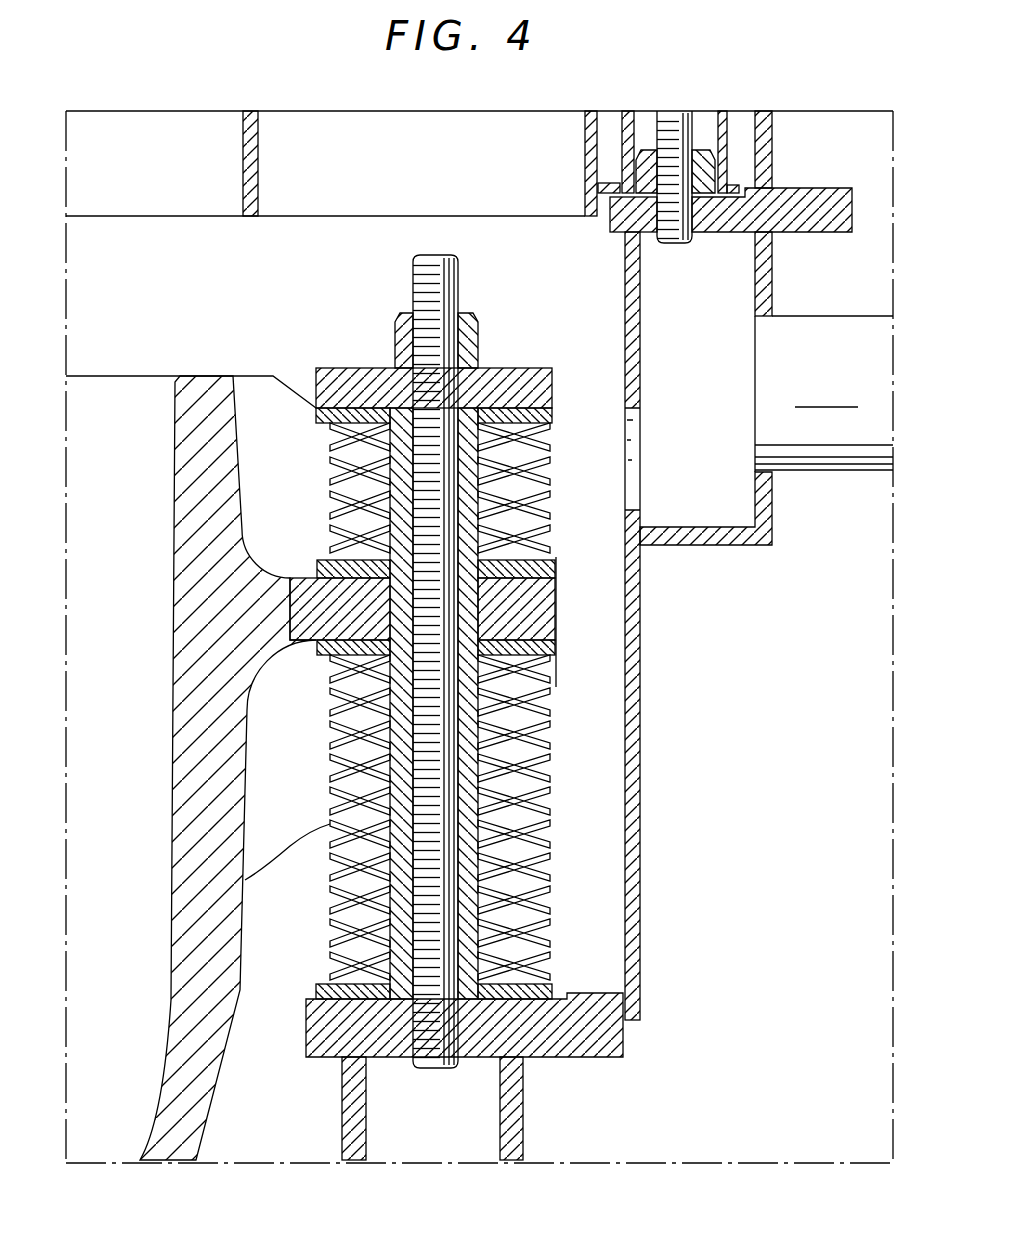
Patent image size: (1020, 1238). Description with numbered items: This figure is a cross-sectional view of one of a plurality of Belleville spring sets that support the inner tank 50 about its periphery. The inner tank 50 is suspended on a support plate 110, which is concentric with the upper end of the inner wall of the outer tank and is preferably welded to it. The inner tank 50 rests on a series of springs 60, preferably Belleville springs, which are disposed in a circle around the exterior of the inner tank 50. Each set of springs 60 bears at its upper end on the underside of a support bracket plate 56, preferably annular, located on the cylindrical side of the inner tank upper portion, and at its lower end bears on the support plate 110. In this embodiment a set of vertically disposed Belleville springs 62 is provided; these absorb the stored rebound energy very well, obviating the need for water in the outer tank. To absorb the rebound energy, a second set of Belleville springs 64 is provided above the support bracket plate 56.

The inner tank 50 is at (180, 817).
The support bracket plate 56 is at (548, 612).
The springs 60 is at (598, 750).
The vertically disposed Belleville springs 62 is at (560, 806).
The second set of Belleville springs 64 is at (549, 472).
The support plate 110 is at (612, 1058).